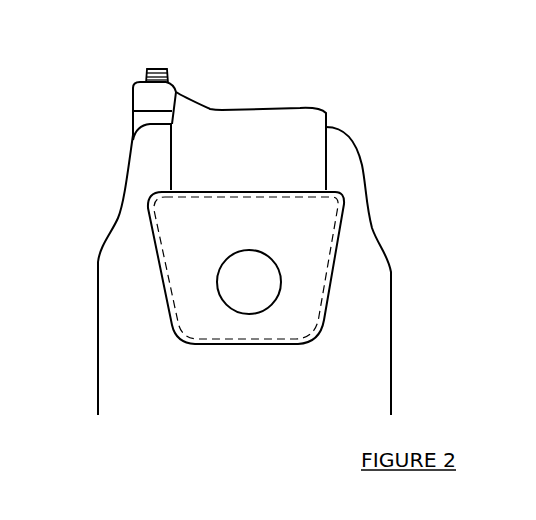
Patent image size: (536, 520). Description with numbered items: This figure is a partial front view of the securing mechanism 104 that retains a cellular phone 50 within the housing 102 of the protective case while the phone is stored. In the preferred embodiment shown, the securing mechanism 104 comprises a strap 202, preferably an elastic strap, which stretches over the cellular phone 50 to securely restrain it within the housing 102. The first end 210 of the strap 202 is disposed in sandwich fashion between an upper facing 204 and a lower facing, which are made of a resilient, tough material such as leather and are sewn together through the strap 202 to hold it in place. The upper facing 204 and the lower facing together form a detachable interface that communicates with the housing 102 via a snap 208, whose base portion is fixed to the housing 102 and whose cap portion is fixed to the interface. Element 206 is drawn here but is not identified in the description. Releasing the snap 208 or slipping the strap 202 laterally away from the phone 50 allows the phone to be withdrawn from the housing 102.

The cellular phone 50 is at (128, 100).
The housing 102 is at (92, 355).
The securing mechanism 104 is at (380, 97).
The strap 202 is at (205, 98).
The upper facing 204 is at (345, 197).
The cover plate 206 is at (340, 225).
The snap 208 is at (290, 282).
The first end 210 is at (331, 160).